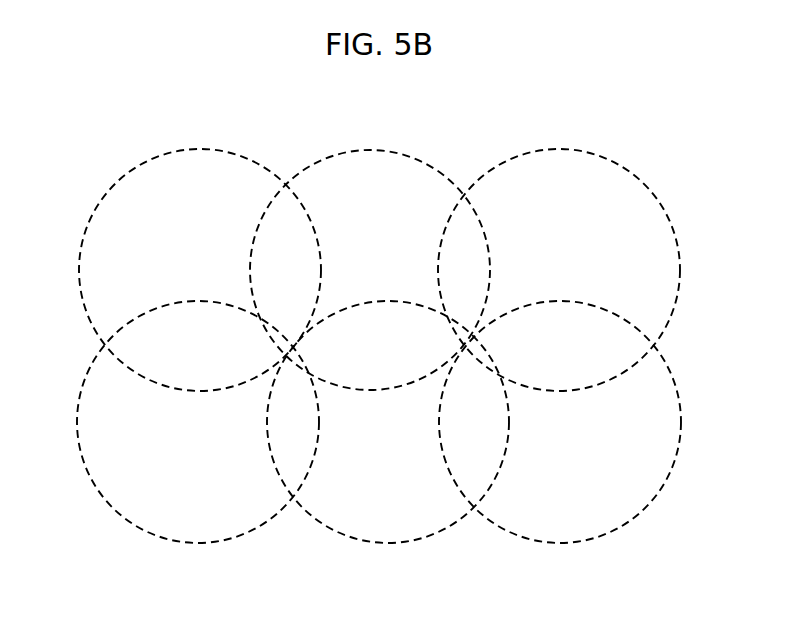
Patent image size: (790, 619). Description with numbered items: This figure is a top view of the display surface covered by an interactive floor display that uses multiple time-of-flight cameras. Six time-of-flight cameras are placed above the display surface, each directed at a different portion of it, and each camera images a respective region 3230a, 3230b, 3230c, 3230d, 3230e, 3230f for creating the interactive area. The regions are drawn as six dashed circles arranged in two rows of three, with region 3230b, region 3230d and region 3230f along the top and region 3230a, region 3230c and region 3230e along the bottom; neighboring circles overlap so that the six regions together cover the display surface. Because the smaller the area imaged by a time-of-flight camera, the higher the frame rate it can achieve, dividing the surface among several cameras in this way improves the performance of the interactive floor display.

The region 3230a is at (186, 542).
The region 3230b is at (115, 172).
The region 3230c is at (410, 542).
The region 3230d is at (397, 116).
The region 3230e is at (616, 591).
The region 3230f is at (668, 116).